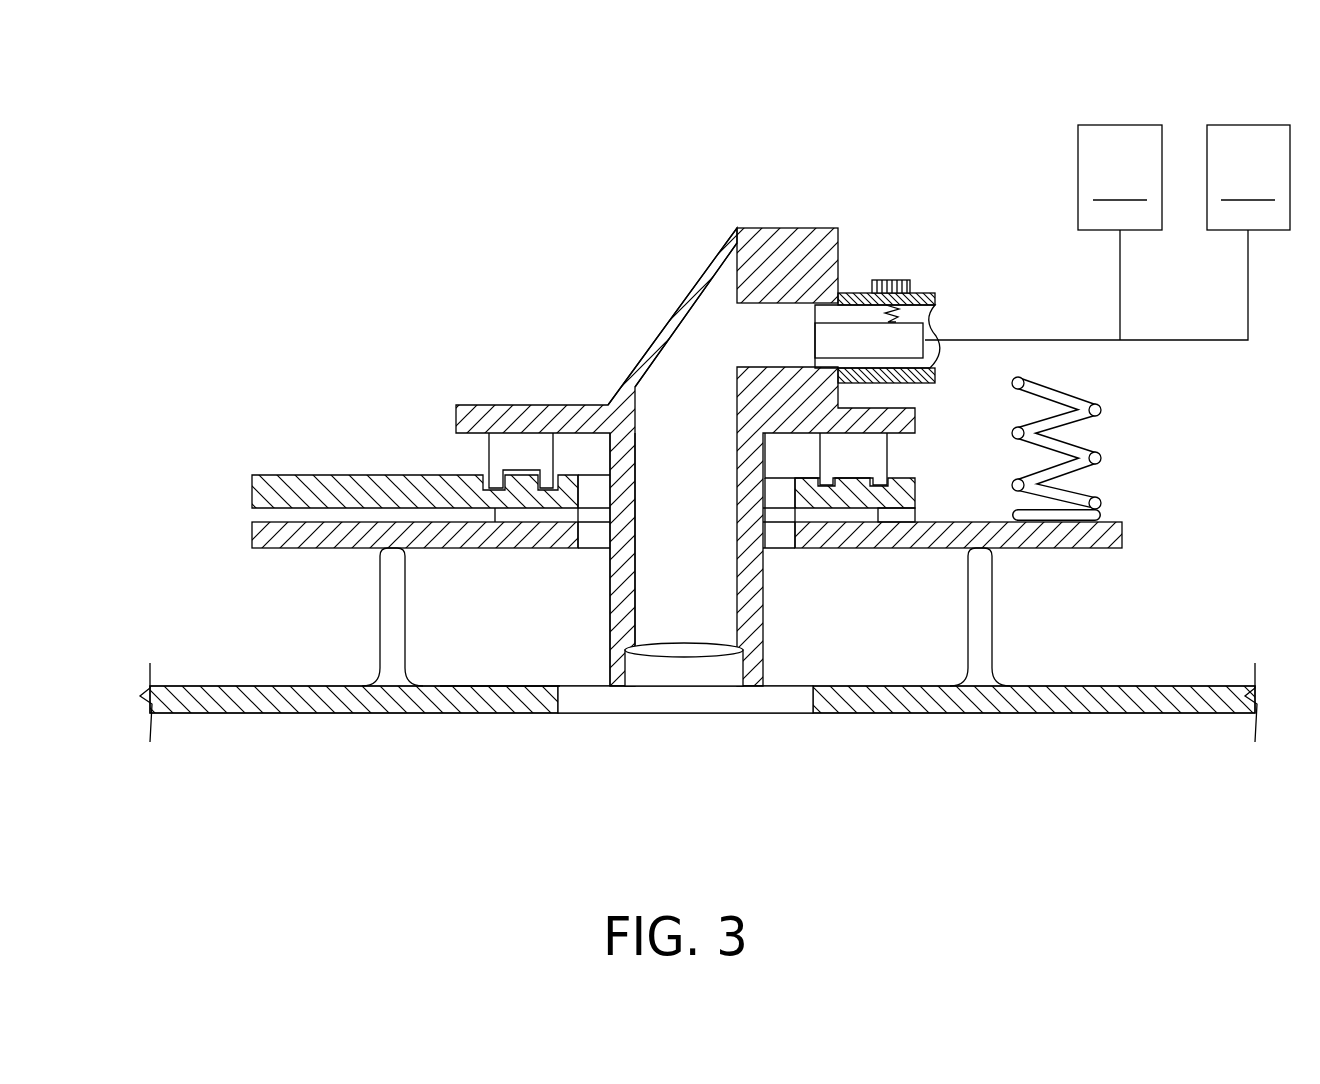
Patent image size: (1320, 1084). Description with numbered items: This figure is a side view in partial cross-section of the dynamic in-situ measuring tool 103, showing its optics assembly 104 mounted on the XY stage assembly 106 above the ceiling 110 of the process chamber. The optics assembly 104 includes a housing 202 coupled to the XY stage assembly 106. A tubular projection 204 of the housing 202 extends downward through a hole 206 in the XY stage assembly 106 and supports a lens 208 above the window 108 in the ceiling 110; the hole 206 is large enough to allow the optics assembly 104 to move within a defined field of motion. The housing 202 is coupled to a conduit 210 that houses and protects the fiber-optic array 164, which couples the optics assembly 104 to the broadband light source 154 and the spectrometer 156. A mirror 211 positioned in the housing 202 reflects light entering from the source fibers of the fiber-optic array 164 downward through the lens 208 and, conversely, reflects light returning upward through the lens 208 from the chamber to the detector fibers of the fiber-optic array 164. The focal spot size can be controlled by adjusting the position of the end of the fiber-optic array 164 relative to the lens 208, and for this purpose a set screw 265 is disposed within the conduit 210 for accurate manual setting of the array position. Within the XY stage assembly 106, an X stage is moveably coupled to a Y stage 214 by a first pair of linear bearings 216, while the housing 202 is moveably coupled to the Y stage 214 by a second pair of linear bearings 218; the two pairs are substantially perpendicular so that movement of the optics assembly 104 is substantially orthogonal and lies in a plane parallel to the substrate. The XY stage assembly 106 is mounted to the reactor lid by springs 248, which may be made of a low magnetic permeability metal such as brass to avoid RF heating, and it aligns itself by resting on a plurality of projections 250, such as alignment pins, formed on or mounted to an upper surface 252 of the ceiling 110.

The measuring tool 103 is at (701, 430).
The optics assembly 104 is at (852, 437).
The XY stage assembly 106 is at (617, 463).
The window 108 is at (675, 713).
The ceiling 110 is at (880, 713).
The broadband light source 154 is at (1248, 177).
The spectrometer 156 is at (1120, 177).
The fiber-optic array 164 is at (1000, 340).
The housing 202 is at (570, 403).
The tubular projection 204 is at (610, 600).
The hole 206 is at (778, 566).
The lens 208 is at (738, 640).
The conduit 210 is at (852, 290).
The mirror 211 is at (695, 285).
The Y stage 214 is at (918, 490).
The first pair of linear bearings 216 is at (900, 516).
The second pair of linear bearings 218 is at (507, 448).
The springs 248 is at (1110, 440).
The projections 250 is at (378, 605).
The upper surface 252 is at (458, 686).
The set screw 265 is at (890, 280).